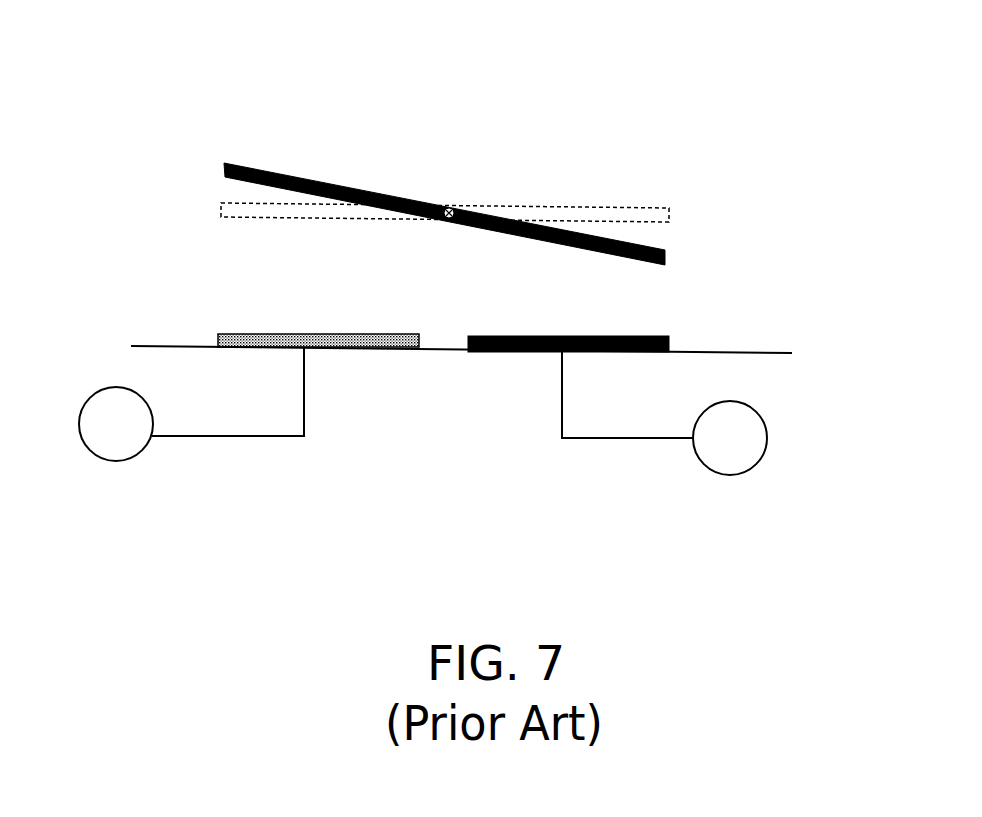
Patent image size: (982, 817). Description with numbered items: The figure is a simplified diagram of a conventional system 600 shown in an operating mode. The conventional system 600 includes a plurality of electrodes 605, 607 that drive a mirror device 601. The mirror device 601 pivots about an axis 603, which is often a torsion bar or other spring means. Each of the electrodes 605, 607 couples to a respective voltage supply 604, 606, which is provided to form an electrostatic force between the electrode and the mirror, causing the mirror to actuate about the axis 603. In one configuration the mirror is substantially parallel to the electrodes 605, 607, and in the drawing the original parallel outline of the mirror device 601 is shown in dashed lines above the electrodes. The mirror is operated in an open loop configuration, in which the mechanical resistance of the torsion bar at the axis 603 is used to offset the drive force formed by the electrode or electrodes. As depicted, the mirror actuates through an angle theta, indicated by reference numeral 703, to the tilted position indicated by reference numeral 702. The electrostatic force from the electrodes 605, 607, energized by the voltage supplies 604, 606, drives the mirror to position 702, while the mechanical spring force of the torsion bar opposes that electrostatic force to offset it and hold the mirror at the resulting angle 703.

The conventional system 600 is at (709, 63).
The mirror device 601 is at (602, 211).
The axis 603 is at (447, 216).
The voltage supply 604 is at (102, 461).
The electrode 605 is at (508, 352).
The voltage supply 606 is at (767, 457).
The electrode 607 is at (355, 350).
The mirror position 702 is at (667, 255).
The angle theta 703 is at (686, 236).